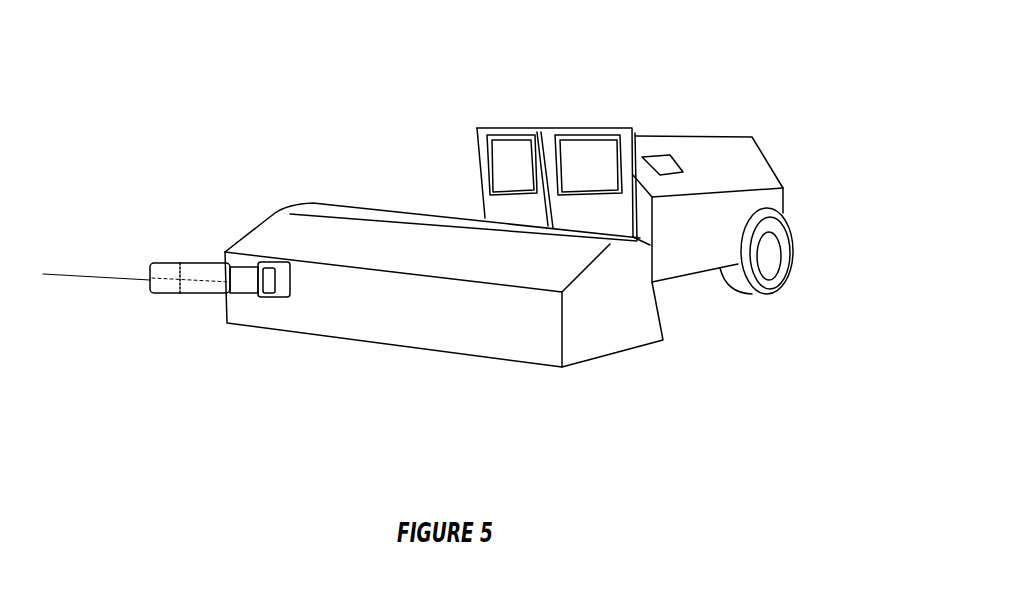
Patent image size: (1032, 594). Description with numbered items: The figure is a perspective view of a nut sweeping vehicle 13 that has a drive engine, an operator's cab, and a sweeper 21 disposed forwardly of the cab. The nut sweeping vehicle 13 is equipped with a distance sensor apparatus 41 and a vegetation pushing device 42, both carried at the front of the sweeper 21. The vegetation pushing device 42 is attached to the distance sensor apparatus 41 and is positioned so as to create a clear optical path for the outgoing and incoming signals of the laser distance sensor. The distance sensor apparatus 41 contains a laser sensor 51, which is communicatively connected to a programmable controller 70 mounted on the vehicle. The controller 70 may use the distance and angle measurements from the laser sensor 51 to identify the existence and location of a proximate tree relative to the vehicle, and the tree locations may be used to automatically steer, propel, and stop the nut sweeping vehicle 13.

The nut sweeping vehicle 13 is at (798, 122).
The sweeper 21 is at (448, 332).
The distance sensor apparatus 41 is at (278, 268).
The vegetation pushing device 42 is at (197, 273).
The laser sensor 51 is at (267, 293).
The programmable controller 70 is at (660, 160).